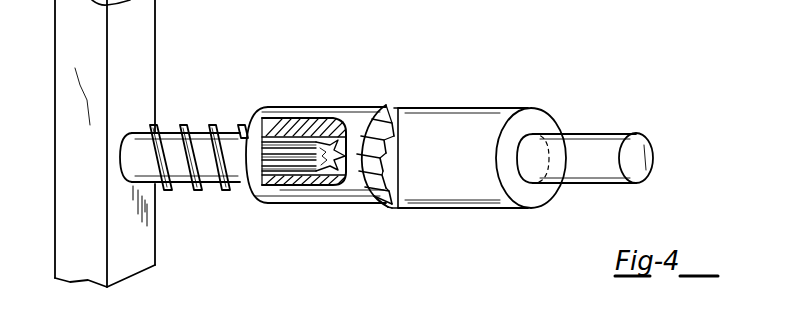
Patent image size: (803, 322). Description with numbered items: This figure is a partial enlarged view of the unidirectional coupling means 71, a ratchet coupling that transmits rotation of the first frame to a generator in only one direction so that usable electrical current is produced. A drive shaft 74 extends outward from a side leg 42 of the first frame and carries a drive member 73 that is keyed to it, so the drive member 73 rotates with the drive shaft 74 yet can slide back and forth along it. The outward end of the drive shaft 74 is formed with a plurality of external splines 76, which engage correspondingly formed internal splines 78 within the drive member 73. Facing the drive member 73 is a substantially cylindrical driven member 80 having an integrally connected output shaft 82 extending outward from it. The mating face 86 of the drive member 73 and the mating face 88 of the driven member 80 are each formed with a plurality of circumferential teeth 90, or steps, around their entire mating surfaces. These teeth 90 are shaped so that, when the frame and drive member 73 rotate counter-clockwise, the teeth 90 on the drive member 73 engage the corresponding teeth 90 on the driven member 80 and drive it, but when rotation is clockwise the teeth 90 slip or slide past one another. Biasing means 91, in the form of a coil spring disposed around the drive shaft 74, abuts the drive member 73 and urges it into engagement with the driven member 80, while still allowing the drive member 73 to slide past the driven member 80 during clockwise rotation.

The side leg 42 is at (133, 67).
The unidirectional coupling means 71 is at (402, 40).
The drive member 73 is at (284, 109).
The drive shaft 74 is at (161, 130).
The external splines 76 is at (290, 172).
The internal splines 78 is at (330, 172).
The driven member 80 is at (480, 107).
The output shaft 82 is at (601, 134).
The mating face 86 is at (384, 108).
The mating face 88 is at (393, 108).
The circumferential teeth 90 is at (372, 198).
The biasing means 91 is at (207, 192).